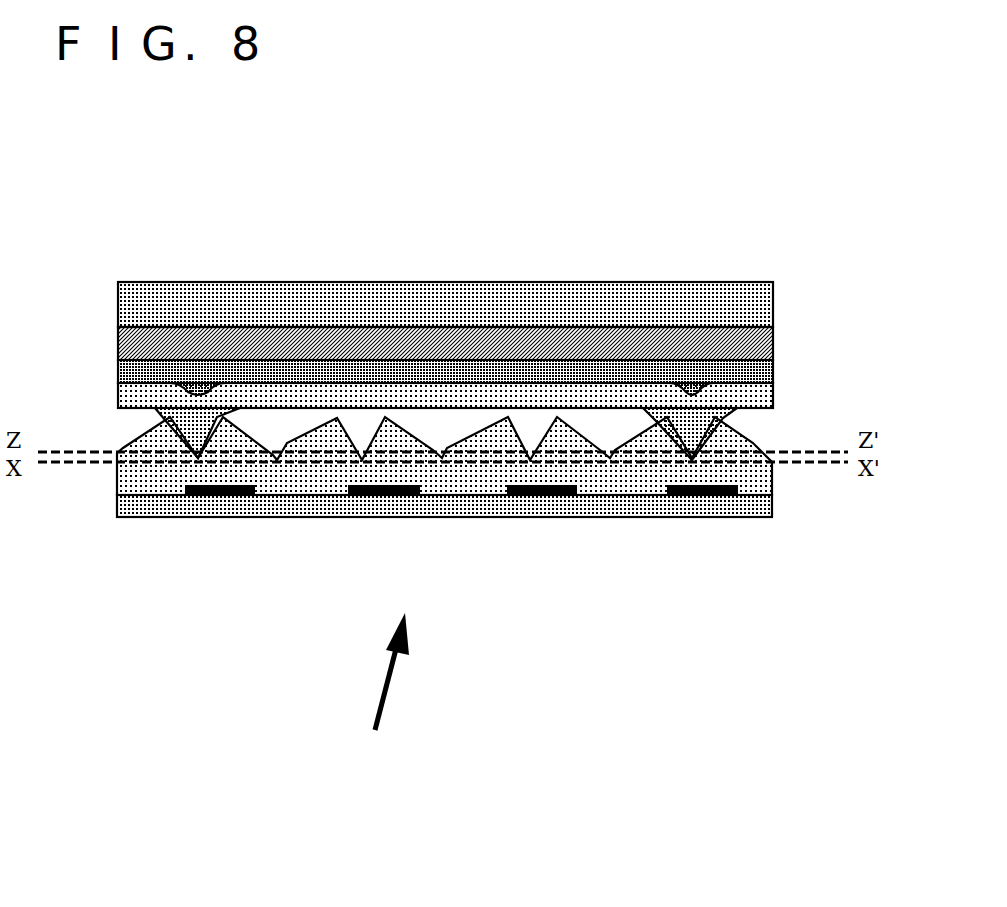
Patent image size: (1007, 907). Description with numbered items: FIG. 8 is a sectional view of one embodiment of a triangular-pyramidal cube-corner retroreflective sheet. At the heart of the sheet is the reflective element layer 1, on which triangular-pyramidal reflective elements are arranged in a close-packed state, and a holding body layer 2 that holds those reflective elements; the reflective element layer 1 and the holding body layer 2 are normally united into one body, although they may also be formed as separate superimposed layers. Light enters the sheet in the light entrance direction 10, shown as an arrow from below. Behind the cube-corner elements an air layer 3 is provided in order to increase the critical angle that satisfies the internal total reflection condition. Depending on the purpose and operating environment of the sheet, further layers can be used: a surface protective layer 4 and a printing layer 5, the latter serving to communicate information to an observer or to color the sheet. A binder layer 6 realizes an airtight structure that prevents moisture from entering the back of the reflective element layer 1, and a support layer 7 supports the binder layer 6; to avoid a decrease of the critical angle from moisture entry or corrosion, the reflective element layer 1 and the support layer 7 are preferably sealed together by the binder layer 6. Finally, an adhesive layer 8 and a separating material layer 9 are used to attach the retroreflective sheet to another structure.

The reflective element layer 1 is at (718, 440).
The holding body layer 2 is at (747, 477).
The air layer 3 is at (607, 430).
The surface protective layer 4 is at (480, 503).
The printing layer 5 is at (665, 489).
The binder layer 6 is at (480, 400).
The support layer 7 is at (378, 368).
The adhesive layer 8 is at (272, 348).
The separating material layer 9 is at (185, 308).
The light entrance direction 10 is at (381, 694).